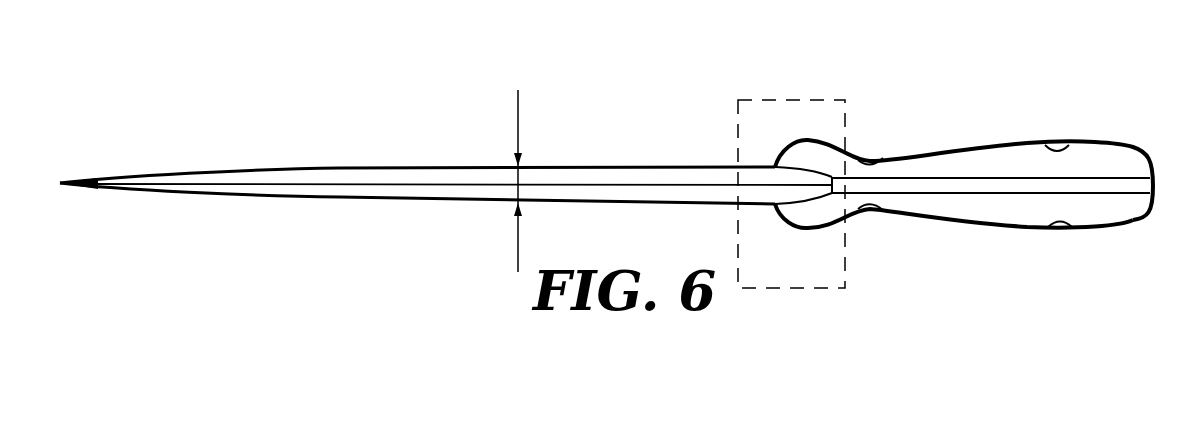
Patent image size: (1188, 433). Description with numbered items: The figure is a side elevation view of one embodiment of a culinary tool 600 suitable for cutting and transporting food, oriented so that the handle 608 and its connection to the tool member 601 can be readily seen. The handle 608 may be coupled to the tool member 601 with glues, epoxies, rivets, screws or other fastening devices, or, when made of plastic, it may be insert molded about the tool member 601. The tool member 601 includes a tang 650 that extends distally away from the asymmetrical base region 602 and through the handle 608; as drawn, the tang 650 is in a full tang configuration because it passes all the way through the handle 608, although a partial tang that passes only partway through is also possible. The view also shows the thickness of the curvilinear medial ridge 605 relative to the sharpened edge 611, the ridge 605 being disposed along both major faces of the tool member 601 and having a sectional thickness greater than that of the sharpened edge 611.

The culinary tool 600 is at (252, 156).
The tool member 601 is at (465, 203).
The asymmetrical base region 602 is at (795, 100).
The curvilinear medial ridge 605 is at (518, 137).
The handle 608 is at (1010, 211).
The sharpened edge 611 is at (555, 185).
The tang 650 is at (942, 185).